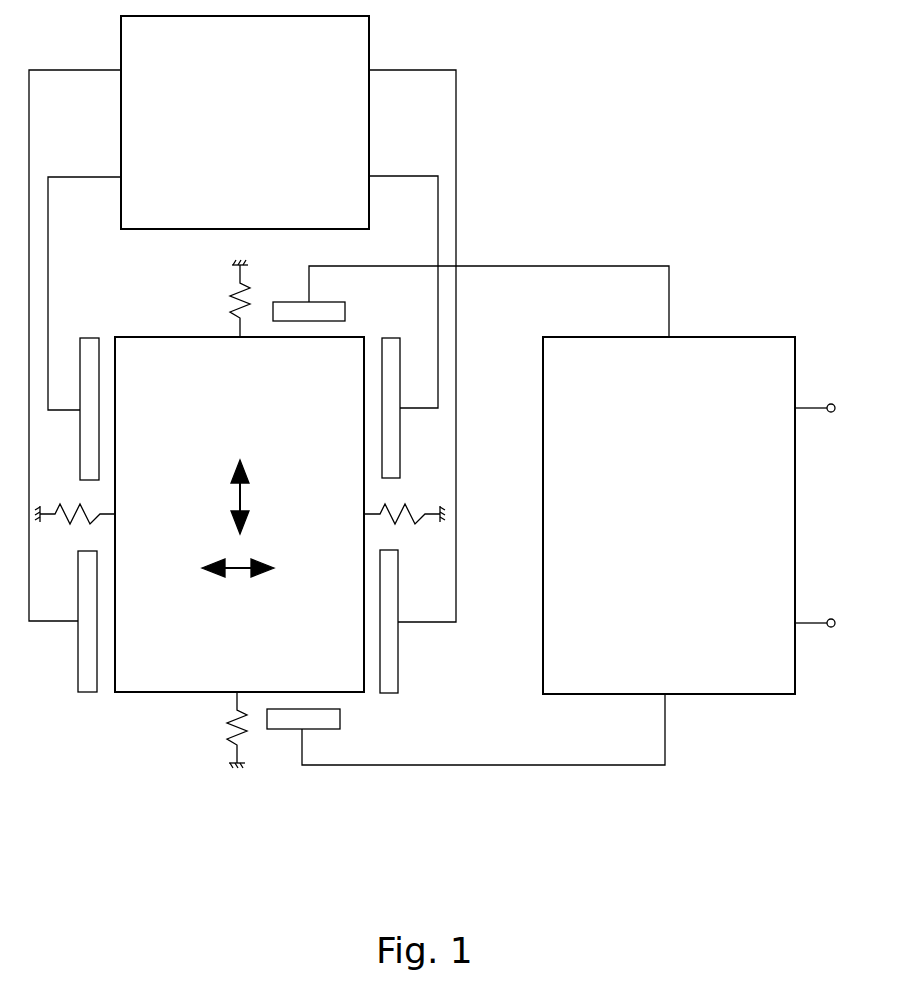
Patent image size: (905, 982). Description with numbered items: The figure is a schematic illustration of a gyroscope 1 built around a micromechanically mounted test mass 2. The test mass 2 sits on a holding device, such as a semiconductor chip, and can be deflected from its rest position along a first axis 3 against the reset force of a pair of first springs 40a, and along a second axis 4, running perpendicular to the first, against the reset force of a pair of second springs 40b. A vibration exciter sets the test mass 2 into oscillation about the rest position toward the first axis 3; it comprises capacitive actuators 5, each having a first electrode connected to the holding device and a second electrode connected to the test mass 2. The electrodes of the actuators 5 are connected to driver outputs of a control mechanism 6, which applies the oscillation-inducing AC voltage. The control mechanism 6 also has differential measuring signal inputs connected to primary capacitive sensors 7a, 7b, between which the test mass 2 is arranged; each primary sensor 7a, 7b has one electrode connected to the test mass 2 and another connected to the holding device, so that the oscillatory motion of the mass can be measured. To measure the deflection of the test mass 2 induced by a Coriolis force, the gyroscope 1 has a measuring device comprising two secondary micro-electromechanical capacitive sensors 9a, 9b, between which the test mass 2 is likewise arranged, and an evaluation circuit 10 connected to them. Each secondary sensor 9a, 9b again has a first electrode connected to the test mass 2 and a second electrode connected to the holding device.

The gyroscope 1 is at (645, 858).
The test mass 2 is at (248, 427).
The first axis 3 is at (237, 573).
The second axis 4 is at (243, 495).
The capacitive actuators 5 is at (93, 345).
The control mechanism 6 is at (255, 137).
The primary capacitive sensor 7a is at (390, 676).
The primary capacitive sensor 7b is at (84, 686).
The secondary micro-electromechanical capacitive sensor 9a is at (290, 718).
The secondary micro-electromechanical capacitive sensor 9b is at (293, 314).
The evaluation circuit 10 is at (675, 531).
The first springs 40a is at (72, 505).
The second springs 40b is at (237, 302).